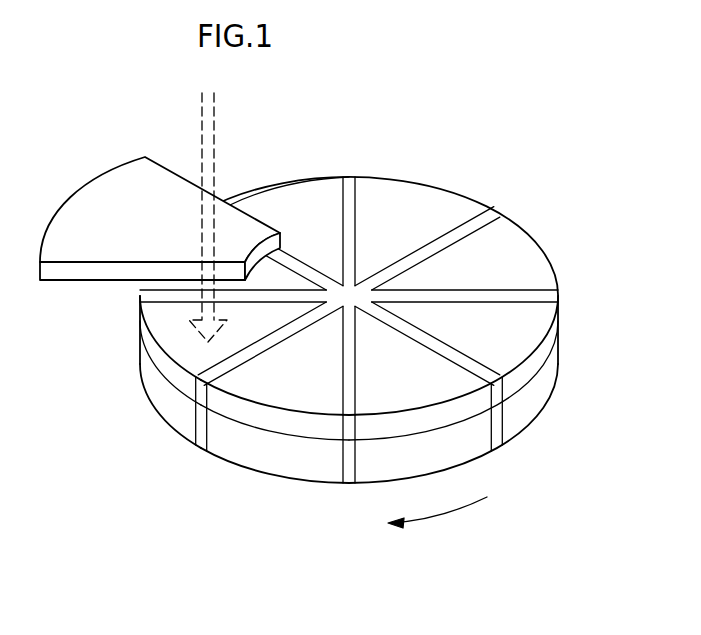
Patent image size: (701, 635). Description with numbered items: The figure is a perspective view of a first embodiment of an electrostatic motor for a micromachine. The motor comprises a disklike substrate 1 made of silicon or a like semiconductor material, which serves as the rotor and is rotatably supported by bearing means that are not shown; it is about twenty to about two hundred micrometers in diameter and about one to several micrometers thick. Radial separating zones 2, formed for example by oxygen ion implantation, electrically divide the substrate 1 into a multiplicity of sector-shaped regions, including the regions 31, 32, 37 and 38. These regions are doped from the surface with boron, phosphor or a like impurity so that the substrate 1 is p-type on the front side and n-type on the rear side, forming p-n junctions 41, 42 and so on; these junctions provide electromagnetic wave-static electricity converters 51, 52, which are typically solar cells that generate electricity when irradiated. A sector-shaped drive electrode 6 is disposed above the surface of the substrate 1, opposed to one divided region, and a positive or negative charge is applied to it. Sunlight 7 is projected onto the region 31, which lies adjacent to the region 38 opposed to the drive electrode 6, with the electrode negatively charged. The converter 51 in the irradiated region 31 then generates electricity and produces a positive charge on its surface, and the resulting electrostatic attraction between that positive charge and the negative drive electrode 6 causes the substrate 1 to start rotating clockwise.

The disklike substrate 1 is at (557, 252).
The radial separating zones 2 is at (477, 208).
The drive electrode 6 is at (112, 203).
The sunlight 7 is at (200, 123).
The substrate region 31 is at (147, 358).
The substrate region 32 is at (273, 392).
The substrate region 37 is at (272, 200).
The substrate region 38 is at (287, 277).
The p-n junction 41 is at (150, 394).
The p-n junction 42 is at (295, 440).
The electromagnetic wave-static electricity converter 51 is at (120, 372).
The electromagnetic wave-static electricity converter 52 is at (290, 466).